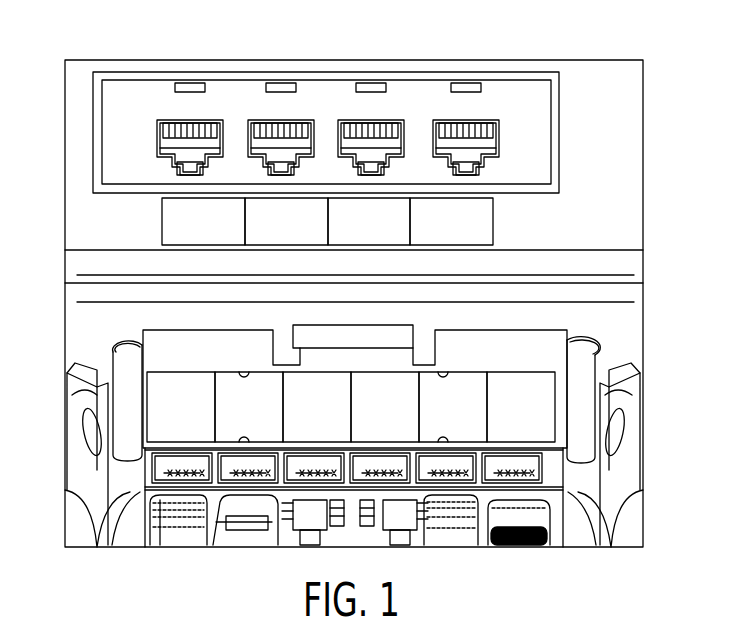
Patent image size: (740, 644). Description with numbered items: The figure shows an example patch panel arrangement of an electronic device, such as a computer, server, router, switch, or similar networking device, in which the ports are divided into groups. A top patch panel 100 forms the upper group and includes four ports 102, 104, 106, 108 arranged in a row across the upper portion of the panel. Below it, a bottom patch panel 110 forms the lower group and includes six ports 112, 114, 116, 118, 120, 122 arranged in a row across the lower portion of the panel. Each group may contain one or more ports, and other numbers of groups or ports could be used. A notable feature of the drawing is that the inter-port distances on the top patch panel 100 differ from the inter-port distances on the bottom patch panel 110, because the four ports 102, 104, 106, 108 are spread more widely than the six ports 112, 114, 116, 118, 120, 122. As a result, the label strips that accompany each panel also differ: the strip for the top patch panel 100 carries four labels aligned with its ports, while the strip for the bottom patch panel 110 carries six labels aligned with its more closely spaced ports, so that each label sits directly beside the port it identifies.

The top patch panel 100 is at (82, 82).
The port 102 is at (170, 120).
The port 104 is at (263, 120).
The port 106 is at (353, 120).
The port 108 is at (448, 120).
The bottom patch panel 110 is at (92, 336).
The port 112 is at (198, 473).
The port 114 is at (270, 470).
The port 116 is at (312, 473).
The port 118 is at (400, 470).
The port 120 is at (467, 470).
The port 122 is at (533, 470).